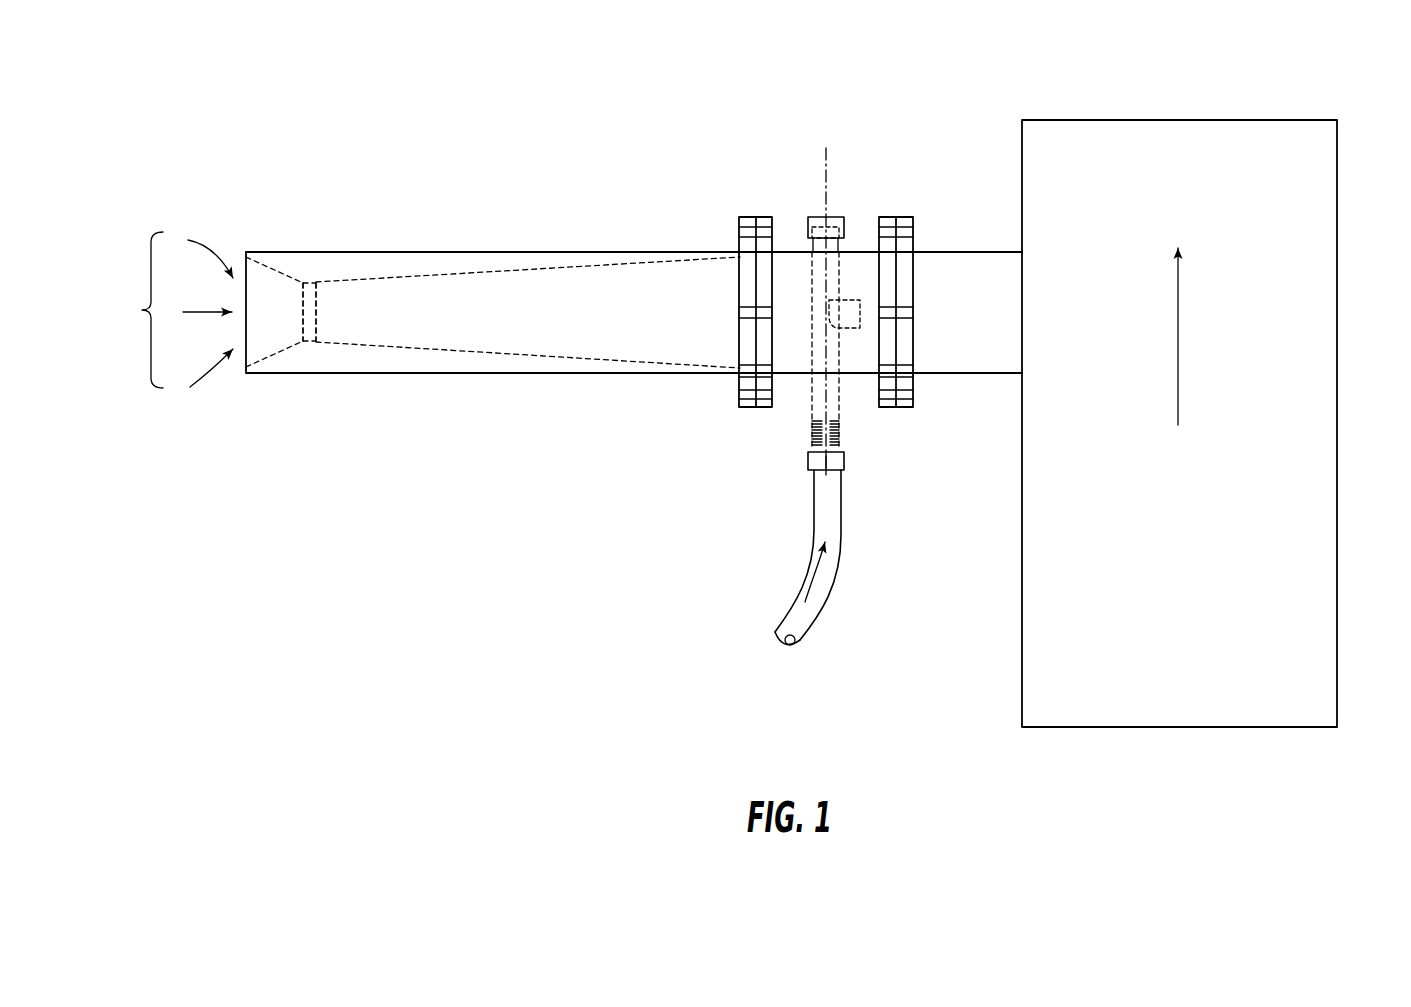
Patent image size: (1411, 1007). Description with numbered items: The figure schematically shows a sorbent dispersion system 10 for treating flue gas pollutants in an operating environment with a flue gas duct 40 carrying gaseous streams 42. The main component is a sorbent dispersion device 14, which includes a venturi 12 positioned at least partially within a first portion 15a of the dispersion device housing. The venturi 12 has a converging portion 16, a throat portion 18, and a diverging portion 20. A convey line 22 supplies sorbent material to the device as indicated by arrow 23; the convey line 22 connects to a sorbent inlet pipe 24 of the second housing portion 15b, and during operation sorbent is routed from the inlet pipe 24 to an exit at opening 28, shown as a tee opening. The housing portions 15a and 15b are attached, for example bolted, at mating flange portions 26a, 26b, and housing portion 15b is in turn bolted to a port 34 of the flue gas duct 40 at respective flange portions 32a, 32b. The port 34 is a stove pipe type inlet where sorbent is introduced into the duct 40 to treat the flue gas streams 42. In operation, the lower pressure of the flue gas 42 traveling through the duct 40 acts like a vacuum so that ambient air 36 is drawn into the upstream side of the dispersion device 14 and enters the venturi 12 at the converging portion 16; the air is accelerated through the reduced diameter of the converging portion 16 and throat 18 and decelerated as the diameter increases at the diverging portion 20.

The sorbent dispersion system 10 is at (488, 136).
The venturi 12 is at (487, 262).
The sorbent dispersion device 14 is at (603, 236).
The first portion of dispersion device housing 15a is at (343, 245).
The second portion of dispersion device housing 15b is at (791, 246).
The converging portion 16 is at (280, 364).
The throat portion 18 is at (322, 351).
The diverging portion 20 is at (533, 364).
The convey line 22 is at (775, 608).
The sorbent material flow 23 is at (805, 565).
The sorbent inlet pipe 24 is at (801, 460).
The flange portion 26a is at (740, 210).
The flange portion 26b is at (766, 212).
The opening 28 is at (852, 292).
The flange portion 32a is at (890, 418).
The flange portion 32b is at (908, 415).
The port 34 is at (955, 246).
The air 36 is at (174, 310).
The flue gas duct 40 is at (1345, 222).
The gaseous streams 42 is at (1236, 350).